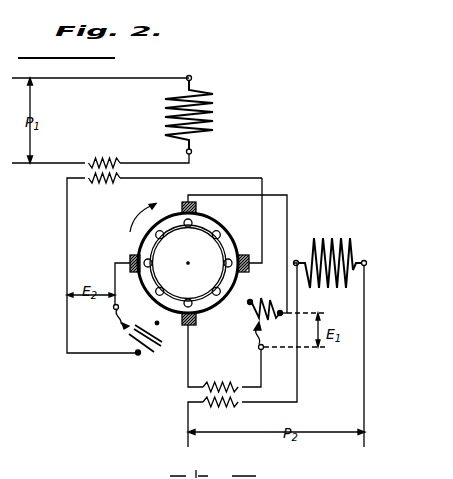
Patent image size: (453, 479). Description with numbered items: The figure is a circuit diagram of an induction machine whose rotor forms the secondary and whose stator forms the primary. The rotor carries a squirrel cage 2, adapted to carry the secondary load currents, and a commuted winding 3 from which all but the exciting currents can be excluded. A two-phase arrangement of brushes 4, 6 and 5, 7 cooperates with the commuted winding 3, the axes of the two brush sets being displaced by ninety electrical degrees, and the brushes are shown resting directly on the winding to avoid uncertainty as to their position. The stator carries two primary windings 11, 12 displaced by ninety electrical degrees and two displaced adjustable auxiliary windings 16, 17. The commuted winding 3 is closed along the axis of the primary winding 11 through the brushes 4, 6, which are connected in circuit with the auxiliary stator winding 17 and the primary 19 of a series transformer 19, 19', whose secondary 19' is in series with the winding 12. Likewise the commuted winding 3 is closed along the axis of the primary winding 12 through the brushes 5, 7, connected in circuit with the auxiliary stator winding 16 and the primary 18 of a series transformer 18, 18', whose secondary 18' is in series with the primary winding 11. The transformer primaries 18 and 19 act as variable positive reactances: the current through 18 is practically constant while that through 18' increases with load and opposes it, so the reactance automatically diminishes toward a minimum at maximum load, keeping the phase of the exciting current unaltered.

The squirrel cage 2 is at (207, 228).
The commuted winding 3 is at (140, 235).
The brush 4 is at (242, 255).
The brush 5 is at (186, 203).
The brush 6 is at (134, 275).
The brush 7 is at (191, 324).
The primary winding 11 is at (330, 254).
The primary winding 12 is at (201, 115).
The auxiliary stator winding 16 is at (268, 324).
The auxiliary stator winding 17 is at (133, 330).
The series transformer primary 18 is at (220, 378).
The series transformer secondary 18' is at (221, 411).
The series transformer primary 19 is at (105, 188).
The series transformer secondary 19' is at (105, 154).